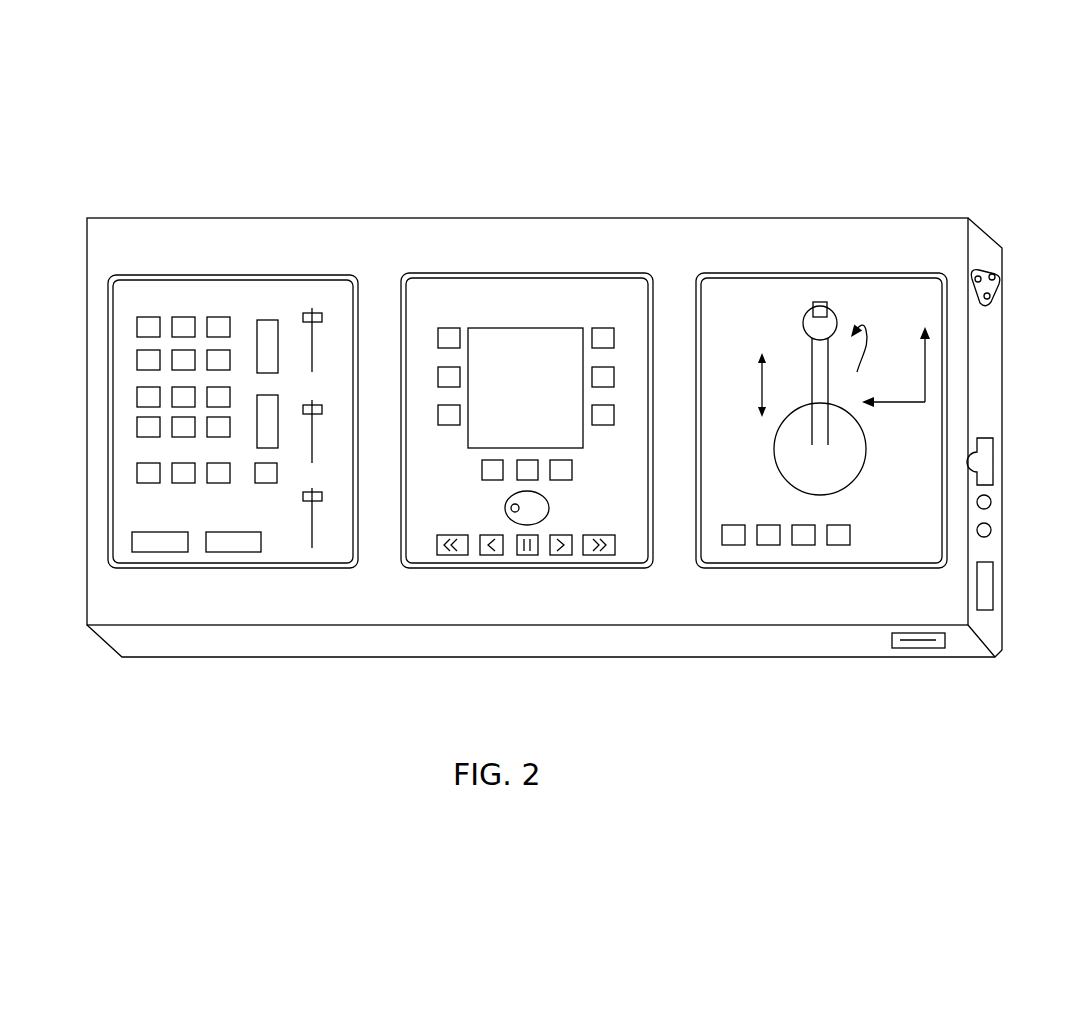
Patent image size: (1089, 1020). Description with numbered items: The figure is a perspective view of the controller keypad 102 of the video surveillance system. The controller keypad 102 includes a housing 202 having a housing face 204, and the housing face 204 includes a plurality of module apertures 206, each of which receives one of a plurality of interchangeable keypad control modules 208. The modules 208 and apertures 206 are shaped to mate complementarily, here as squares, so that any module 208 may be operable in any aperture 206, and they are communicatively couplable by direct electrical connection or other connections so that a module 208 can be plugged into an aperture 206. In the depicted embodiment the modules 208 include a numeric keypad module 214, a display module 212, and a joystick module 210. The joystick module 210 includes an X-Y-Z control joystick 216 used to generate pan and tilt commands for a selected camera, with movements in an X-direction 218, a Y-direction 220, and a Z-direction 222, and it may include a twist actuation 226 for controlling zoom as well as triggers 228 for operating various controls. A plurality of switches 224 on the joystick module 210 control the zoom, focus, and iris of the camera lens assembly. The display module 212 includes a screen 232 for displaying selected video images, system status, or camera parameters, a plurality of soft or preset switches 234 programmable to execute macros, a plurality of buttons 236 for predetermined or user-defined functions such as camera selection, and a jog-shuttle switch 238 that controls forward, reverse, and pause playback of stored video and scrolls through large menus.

The controller keypad 102 is at (298, 145).
The housing 202 is at (897, 218).
The housing face 204 is at (395, 233).
The module apertures 206 is at (305, 275).
The interchangeable keypad control modules 208 is at (270, 521).
The joystick module 210 is at (743, 565).
The display module 212 is at (467, 560).
The numeric keypad module 214 is at (342, 557).
The X-Y-Z control joystick 216 is at (797, 312).
The X-direction 218 is at (925, 365).
The Y-direction 220 is at (898, 403).
The Z-direction 222 is at (760, 376).
The switches 224 is at (718, 552).
The twist actuation 226 is at (860, 360).
The triggers 228 is at (806, 330).
The screen 232 is at (545, 397).
The soft and/or preset switches 234 is at (448, 313).
The buttons 236 is at (472, 470).
The jog-shuttle switch 238 is at (548, 507).